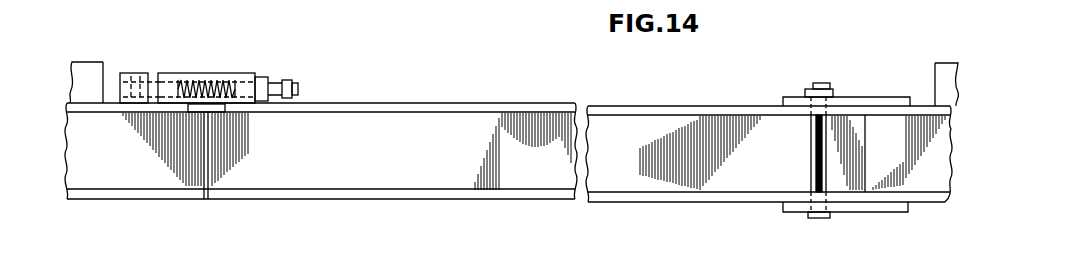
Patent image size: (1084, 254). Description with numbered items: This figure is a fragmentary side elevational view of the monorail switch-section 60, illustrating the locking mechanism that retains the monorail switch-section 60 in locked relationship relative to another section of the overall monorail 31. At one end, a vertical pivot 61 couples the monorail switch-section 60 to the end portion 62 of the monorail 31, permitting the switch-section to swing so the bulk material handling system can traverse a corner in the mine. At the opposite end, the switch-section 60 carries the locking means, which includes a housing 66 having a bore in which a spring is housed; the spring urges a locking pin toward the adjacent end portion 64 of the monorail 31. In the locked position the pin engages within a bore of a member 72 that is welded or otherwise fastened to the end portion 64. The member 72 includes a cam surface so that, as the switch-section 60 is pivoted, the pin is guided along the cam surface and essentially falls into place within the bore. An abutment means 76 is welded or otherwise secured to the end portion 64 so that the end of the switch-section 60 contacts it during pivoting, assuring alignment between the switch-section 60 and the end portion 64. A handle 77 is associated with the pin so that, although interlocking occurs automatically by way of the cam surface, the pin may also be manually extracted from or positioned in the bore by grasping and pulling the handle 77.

The monorail 31 is at (930, 166).
The monorail switch-section 60 is at (512, 99).
The vertical pivot 61 is at (826, 86).
The end portion 62 is at (905, 182).
The end portion 64 is at (115, 168).
The housing 66 is at (205, 73).
The member 72 is at (136, 73).
The abutment means 76 is at (218, 113).
The handle 77 is at (286, 77).